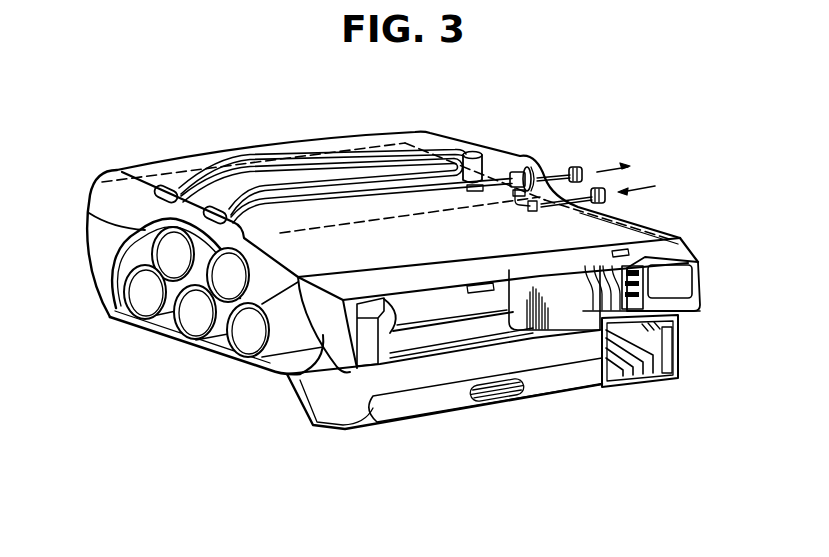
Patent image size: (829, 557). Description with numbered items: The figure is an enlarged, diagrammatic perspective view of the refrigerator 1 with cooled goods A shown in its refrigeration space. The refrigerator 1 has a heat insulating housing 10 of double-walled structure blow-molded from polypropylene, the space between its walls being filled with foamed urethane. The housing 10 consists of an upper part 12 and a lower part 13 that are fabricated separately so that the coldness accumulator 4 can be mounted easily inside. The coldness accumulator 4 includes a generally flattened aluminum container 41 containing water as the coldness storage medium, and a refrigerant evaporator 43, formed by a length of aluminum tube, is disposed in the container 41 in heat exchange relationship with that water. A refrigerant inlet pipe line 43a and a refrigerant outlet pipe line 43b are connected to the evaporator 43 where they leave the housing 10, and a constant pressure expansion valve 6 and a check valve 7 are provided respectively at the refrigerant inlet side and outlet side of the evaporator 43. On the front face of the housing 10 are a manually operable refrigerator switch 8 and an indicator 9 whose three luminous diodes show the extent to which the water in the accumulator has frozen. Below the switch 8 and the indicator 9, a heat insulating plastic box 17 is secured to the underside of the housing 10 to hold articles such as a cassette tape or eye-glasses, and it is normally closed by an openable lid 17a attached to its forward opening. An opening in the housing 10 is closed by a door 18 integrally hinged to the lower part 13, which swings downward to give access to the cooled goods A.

The refrigerator 1 is at (286, 89).
The coldness accumulator 4 is at (233, 162).
The constant pressure expansion valve 6 is at (521, 168).
The check valve 7 is at (483, 152).
The refrigerator switch 8 is at (637, 268).
The indicator 9 is at (638, 292).
The heat insulating housing 10 is at (105, 275).
The upper part 12 is at (98, 187).
The lower part 13 is at (86, 228).
The box 17 is at (641, 388).
The lid 17a is at (658, 343).
The door 18 is at (435, 415).
The container 41 is at (197, 165).
The refrigerant evaporator 43 is at (343, 162).
The refrigerant inlet pipe line 43a is at (575, 200).
The refrigerant outlet pipe line 43b is at (559, 170).
The cooled goods A is at (140, 300).